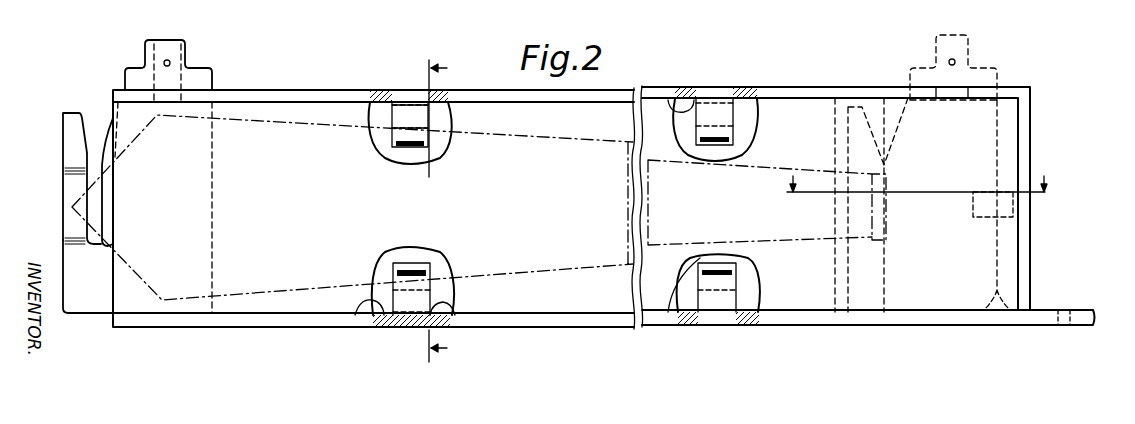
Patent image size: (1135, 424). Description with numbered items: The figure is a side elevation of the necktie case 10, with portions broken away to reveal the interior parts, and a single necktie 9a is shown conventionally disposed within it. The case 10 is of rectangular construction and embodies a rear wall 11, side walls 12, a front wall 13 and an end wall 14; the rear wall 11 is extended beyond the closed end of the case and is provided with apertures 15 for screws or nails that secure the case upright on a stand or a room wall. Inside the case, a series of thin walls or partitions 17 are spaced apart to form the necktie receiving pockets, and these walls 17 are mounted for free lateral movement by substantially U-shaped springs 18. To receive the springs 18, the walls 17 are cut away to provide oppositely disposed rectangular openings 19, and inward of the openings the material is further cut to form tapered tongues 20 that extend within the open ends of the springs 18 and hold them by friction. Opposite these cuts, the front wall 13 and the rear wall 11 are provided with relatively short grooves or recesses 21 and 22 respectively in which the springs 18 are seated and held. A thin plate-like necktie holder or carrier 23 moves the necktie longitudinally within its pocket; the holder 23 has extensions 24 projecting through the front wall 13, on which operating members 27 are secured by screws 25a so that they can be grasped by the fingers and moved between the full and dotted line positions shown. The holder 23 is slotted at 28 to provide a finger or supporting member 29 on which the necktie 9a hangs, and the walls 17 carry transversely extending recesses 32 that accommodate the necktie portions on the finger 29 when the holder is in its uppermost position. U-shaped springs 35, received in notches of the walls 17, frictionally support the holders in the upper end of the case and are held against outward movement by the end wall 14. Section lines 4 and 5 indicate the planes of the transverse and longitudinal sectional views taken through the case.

The necktie 9a is at (275, 114).
The necktie case 10 is at (356, 90).
The rear wall 11 is at (794, 322).
The side walls 12 is at (578, 300).
The front wall 13 is at (795, 96).
The end wall 14 is at (1031, 156).
The apertures 15 is at (1062, 310).
The walls or partitions 17 is at (386, 105).
The U-shaped springs 18 is at (718, 106).
The openings 19 is at (440, 98).
The tapered tongues 20 is at (668, 314).
The grooves or recesses 21 is at (670, 100).
The grooves or recesses 22 is at (364, 312).
The necktie holder or carrier 23 is at (97, 305).
The extensions 24 is at (148, 60).
The screws 25a is at (172, 60).
The operating members 27 is at (206, 80).
The slot 28 is at (92, 218).
The finger or supporting member 29 is at (62, 151).
The transversely extending recesses 32 is at (850, 106).
The U-shaped springs 35 is at (1015, 220).
The section line 4- 4 is at (425, 210).
The section line 5- 5 is at (919, 196).